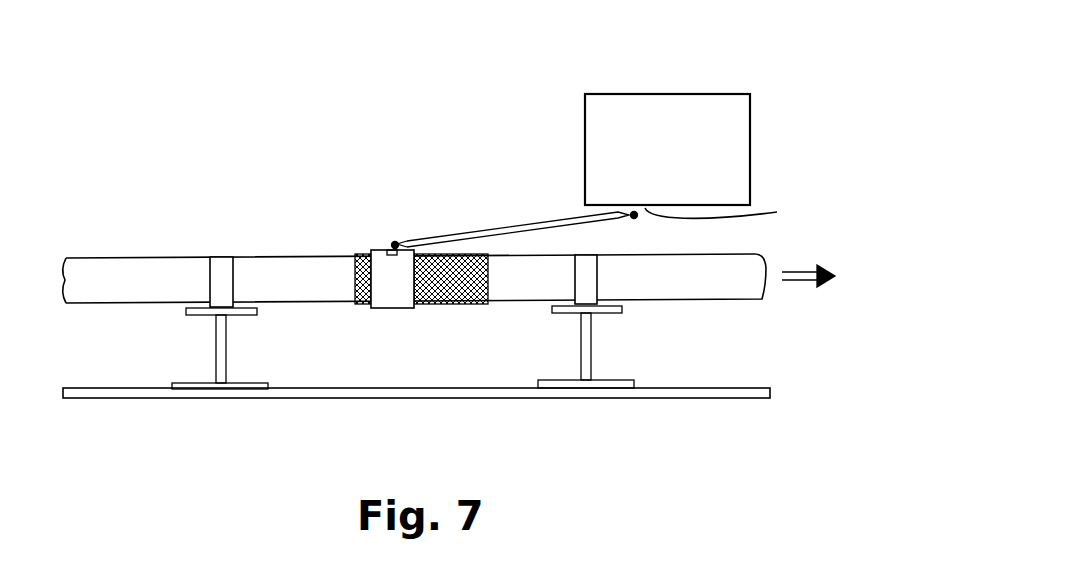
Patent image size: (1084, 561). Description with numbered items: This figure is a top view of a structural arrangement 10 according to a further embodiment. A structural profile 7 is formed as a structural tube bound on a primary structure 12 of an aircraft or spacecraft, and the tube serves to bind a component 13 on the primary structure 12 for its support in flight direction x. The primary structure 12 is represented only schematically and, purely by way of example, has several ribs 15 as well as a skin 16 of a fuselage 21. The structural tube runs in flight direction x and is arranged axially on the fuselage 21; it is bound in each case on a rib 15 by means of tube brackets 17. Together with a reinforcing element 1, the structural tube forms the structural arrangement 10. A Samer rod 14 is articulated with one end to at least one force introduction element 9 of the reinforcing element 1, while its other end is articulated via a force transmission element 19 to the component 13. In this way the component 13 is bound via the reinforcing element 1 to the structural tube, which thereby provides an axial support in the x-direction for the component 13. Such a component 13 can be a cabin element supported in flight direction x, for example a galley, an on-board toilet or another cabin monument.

The reinforcing element 1 is at (433, 181).
The structural profile 7 is at (757, 270).
The force introduction element 9 is at (388, 247).
The structural arrangement 10 is at (327, 167).
The primary structure 12 is at (782, 337).
The component 13 is at (713, 107).
The Samer rod 14 is at (527, 225).
The ribs 15 is at (223, 357).
The skin 16 is at (500, 390).
The tube brackets 17 is at (218, 265).
The force transmission element 19 is at (735, 201).
The fuselage 21 is at (842, 358).
The flight direction x is at (812, 262).